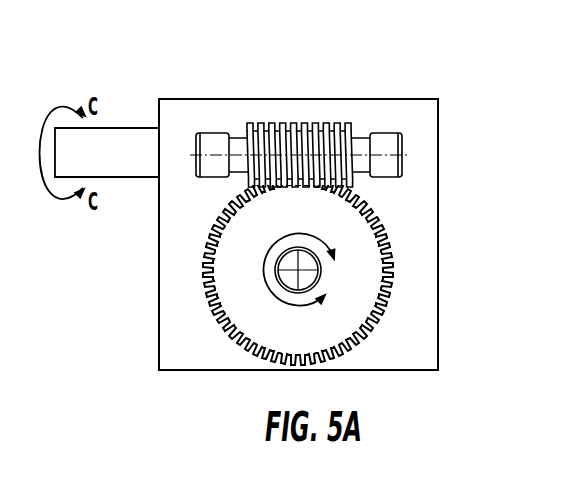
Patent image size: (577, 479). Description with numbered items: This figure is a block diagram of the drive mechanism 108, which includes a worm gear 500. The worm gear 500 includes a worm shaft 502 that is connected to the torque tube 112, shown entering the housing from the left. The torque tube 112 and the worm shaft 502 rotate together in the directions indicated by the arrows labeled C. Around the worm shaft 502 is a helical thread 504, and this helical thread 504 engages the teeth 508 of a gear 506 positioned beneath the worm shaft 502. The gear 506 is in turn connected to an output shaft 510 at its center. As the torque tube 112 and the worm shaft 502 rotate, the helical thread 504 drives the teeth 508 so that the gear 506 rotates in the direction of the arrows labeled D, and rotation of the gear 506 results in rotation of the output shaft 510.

The drive mechanism 108 is at (440, 93).
The torque tube 112 is at (118, 128).
The worm gear 500 is at (351, 201).
The worm shaft 502 is at (215, 133).
The helical thread 504 is at (315, 125).
The gear 506 is at (367, 225).
The teeth 508 is at (357, 270).
The output shaft 510 is at (310, 279).